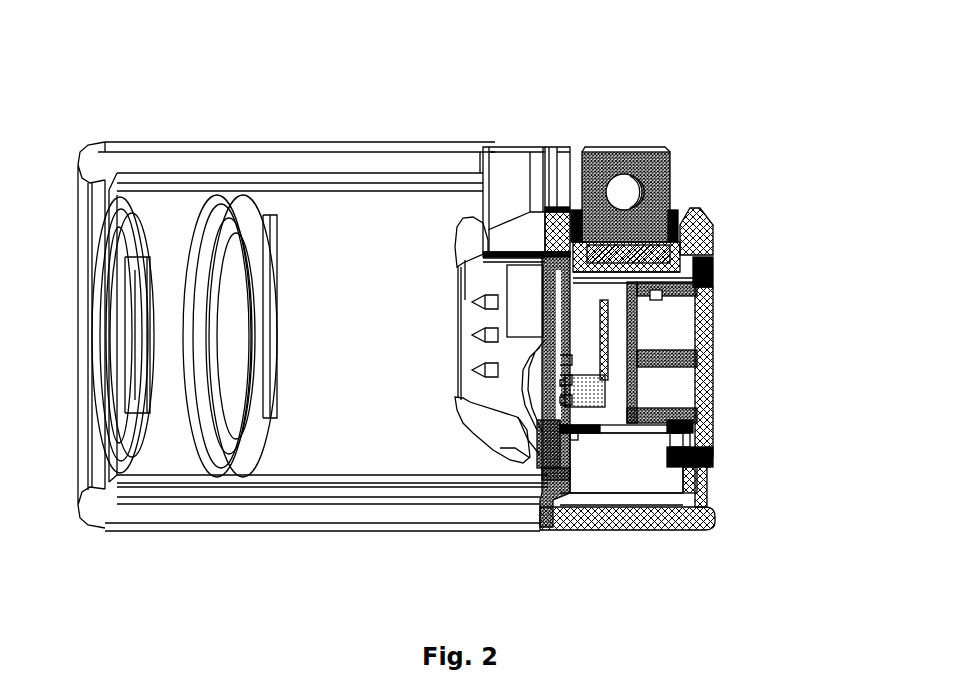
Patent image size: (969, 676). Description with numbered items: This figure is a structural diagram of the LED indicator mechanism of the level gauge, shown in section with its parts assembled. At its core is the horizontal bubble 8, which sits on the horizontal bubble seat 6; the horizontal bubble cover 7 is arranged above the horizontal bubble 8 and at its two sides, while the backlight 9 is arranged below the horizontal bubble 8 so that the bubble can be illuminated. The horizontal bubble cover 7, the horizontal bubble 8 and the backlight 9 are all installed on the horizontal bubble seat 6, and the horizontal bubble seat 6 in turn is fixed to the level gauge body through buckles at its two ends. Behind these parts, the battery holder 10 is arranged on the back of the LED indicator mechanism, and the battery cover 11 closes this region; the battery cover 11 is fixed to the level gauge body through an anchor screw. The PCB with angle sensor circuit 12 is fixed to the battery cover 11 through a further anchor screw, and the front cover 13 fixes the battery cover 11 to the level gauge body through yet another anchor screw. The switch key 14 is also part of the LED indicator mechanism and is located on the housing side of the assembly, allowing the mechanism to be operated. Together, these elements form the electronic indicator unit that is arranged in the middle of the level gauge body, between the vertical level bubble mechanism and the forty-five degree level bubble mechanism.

The horizontal bubble seat 6 is at (548, 235).
The horizontal bubble cover 7 is at (578, 207).
The horizontal bubble 8 is at (622, 160).
The backlight 9 is at (692, 215).
The battery holder 10 is at (713, 273).
The battery cover 11 is at (708, 338).
The PCB with angle sensor circuit 12 is at (593, 400).
The front cover 13 is at (550, 440).
The switch key 14 is at (535, 415).